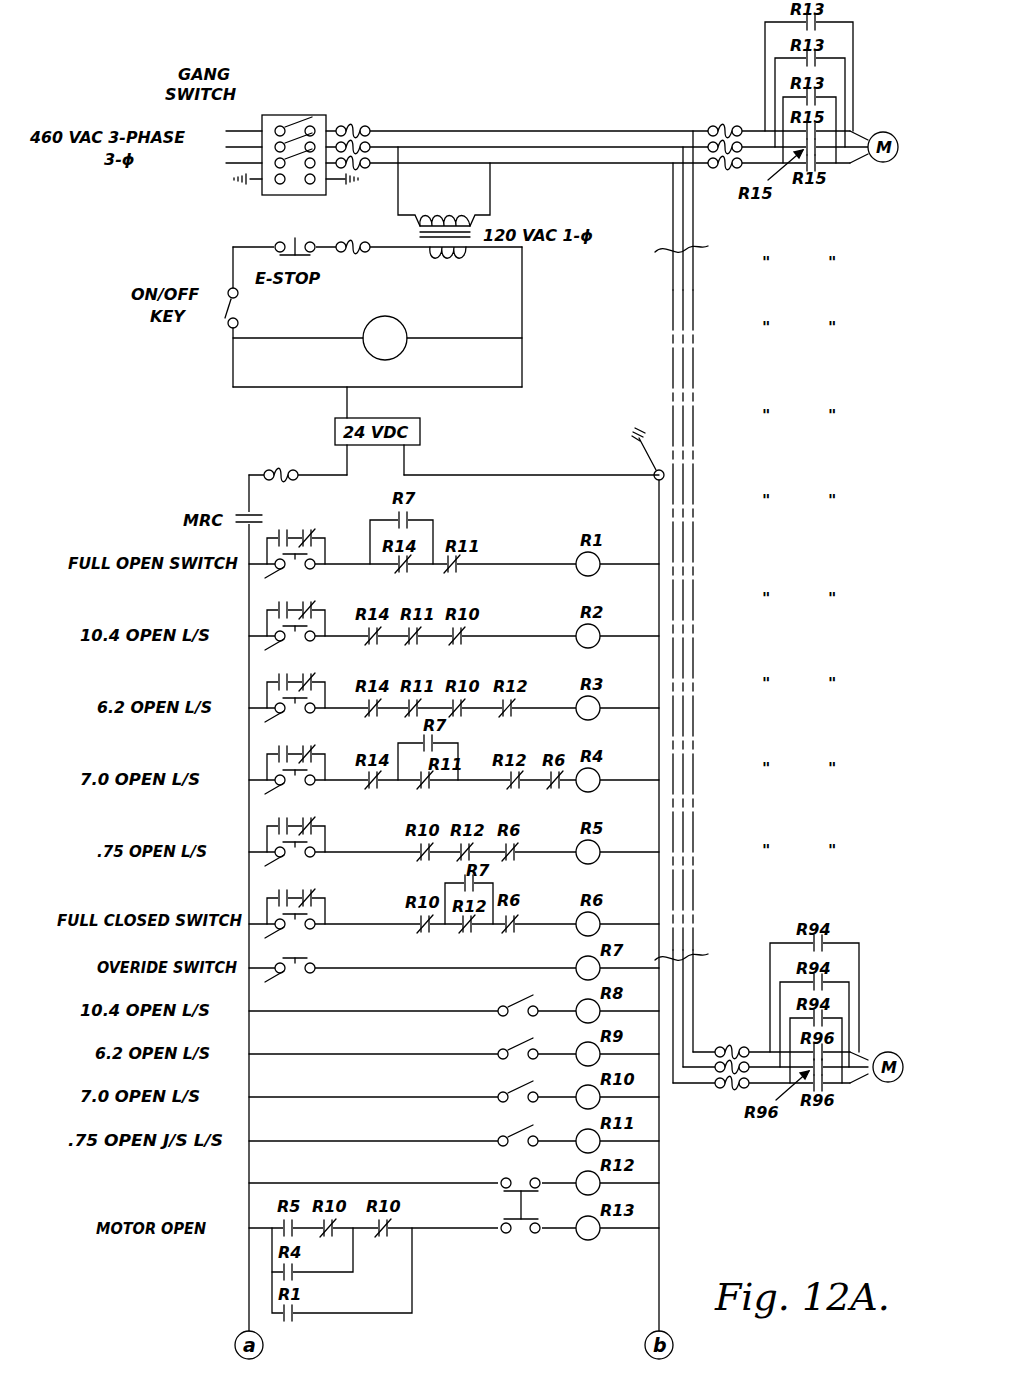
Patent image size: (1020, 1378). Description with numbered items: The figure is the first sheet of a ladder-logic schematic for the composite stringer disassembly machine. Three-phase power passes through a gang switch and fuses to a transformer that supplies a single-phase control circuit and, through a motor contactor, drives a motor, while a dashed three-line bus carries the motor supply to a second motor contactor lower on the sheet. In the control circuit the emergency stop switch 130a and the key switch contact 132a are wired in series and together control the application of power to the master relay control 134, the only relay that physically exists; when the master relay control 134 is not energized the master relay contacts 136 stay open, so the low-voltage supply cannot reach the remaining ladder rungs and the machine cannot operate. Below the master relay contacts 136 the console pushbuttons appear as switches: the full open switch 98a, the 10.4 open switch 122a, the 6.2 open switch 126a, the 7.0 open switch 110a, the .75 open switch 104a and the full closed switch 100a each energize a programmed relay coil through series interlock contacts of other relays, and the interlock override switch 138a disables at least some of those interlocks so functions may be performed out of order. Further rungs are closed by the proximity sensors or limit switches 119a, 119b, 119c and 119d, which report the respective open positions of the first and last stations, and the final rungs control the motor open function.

The emergency stop switch 130a is at (290, 240).
The key switch contact 132a is at (228, 308).
The master relay control 134 is at (406, 327).
The master relay contacts 136 is at (247, 508).
The full open switch 98a is at (265, 578).
The 10.4 open switch 122a is at (265, 650).
The 6.2 open switch 126a is at (265, 722).
The 7.0 open switch 110a is at (265, 794).
The .75 open switch 104a is at (265, 866).
The full closed switch 100a is at (265, 936).
The interlock override switch 138a is at (265, 980).
The 10.4 open limit switch 119a is at (516, 999).
The 6.2 open limit switch 119b is at (516, 1042).
The 7.0 open limit switch 119c is at (516, 1085).
The .75 open limit switch 119d is at (516, 1129).